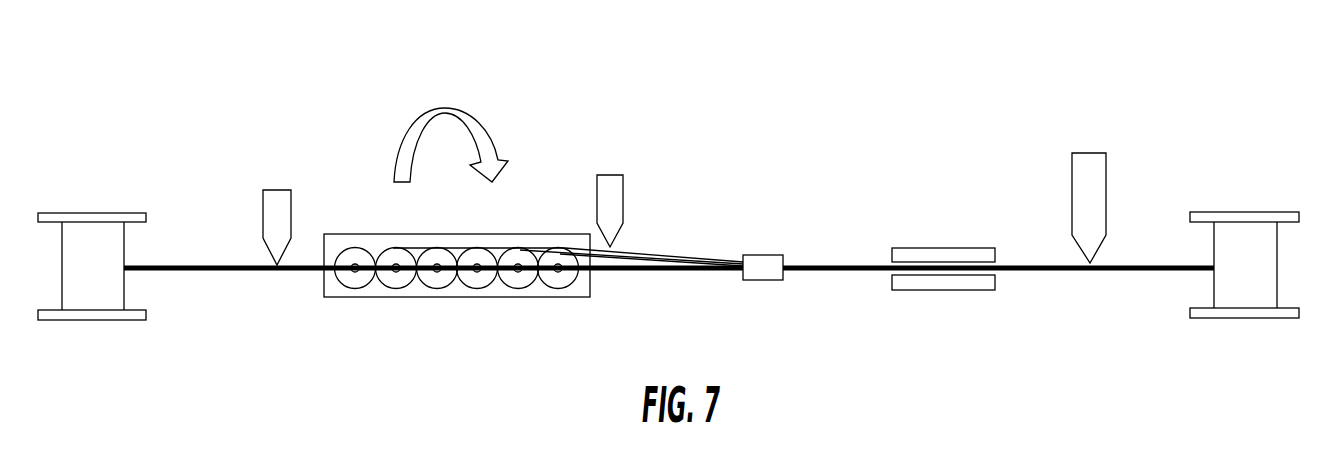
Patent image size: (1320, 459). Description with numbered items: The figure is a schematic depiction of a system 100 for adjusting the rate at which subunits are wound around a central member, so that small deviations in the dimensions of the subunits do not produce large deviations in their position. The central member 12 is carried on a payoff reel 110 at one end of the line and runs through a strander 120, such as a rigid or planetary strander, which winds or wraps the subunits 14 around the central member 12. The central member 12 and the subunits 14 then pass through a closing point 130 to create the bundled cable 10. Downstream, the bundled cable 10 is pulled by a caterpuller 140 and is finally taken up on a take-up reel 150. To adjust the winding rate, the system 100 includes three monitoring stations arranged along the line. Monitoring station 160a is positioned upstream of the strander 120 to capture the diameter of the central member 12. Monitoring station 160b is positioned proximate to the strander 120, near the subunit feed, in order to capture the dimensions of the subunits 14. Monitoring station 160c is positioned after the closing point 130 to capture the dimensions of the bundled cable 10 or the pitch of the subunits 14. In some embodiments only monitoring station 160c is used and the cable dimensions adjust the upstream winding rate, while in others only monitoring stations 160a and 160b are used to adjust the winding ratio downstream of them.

The system 100 is at (148, 66).
The payoff reel 110 is at (88, 255).
The central member 12 is at (238, 272).
The bundled cable 10 is at (840, 270).
The monitoring station 160a is at (277, 200).
The strander 120 is at (457, 290).
The subunits 14 is at (619, 273).
The monitoring station 160b is at (608, 185).
The closing point 130 is at (765, 270).
The caterpuller 140 is at (982, 247).
The monitoring station 160c is at (1088, 167).
The take-up reel 150 is at (1248, 250).